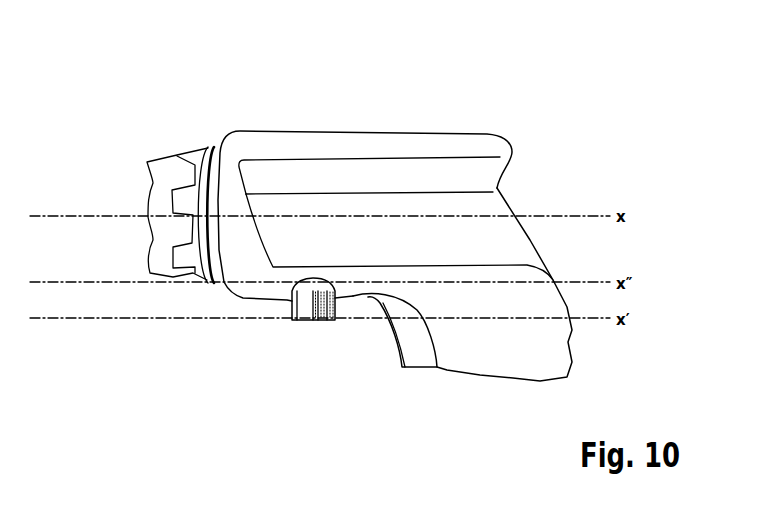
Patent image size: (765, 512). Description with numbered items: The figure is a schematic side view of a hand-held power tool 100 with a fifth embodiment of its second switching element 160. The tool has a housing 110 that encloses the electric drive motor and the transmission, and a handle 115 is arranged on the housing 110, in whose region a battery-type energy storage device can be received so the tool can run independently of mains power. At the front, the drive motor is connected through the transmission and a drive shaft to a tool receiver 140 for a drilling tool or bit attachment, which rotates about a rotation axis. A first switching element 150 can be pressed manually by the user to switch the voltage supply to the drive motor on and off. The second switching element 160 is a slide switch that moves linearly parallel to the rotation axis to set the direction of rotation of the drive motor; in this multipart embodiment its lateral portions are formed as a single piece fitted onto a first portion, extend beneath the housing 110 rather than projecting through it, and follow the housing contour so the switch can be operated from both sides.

The hand-held power tool 100 is at (395, 100).
The housing 110 is at (307, 177).
The handle 115 is at (510, 252).
The tool receiver 140 is at (157, 242).
The first switching element 150 is at (420, 360).
The second switching element 160 is at (318, 322).